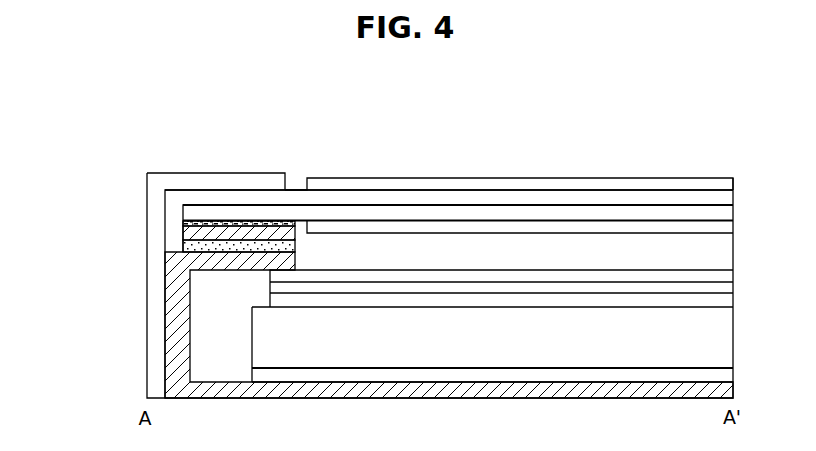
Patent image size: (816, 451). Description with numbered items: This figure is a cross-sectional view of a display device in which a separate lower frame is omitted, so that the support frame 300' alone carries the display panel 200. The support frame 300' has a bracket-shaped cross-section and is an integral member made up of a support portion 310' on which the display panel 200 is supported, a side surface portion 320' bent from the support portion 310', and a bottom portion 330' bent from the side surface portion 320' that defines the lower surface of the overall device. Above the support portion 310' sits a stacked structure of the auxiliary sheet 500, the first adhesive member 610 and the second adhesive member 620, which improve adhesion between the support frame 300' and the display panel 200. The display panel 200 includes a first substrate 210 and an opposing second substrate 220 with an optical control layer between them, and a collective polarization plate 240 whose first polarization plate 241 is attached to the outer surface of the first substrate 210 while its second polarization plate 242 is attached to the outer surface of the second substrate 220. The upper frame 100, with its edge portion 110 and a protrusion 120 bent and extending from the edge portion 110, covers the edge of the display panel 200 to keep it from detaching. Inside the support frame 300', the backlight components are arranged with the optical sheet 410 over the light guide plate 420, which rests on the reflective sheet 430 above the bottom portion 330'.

The upper frame 100 is at (77, 155).
The edge portion 110 is at (157, 205).
The protrusion 120 is at (190, 180).
The display panel 200 is at (385, 128).
The first substrate 210 is at (457, 203).
The second substrate 220 is at (383, 200).
The collective polarization plate 240 is at (558, 128).
The first polarization plate 241 is at (632, 228).
The second polarization plate 242 is at (560, 185).
The support frame 300' is at (372, 325).
The support portion 310' is at (188, 274).
The side surface portion 320' is at (135, 326).
The bottom portion 330' is at (407, 377).
The optical sheet 410 is at (740, 270).
The light guide plate 420 is at (718, 335).
The reflective sheet 430 is at (718, 375).
The auxiliary sheet 500 is at (223, 232).
The first adhesive member 610 is at (183, 242).
The second adhesive member 620 is at (183, 223).